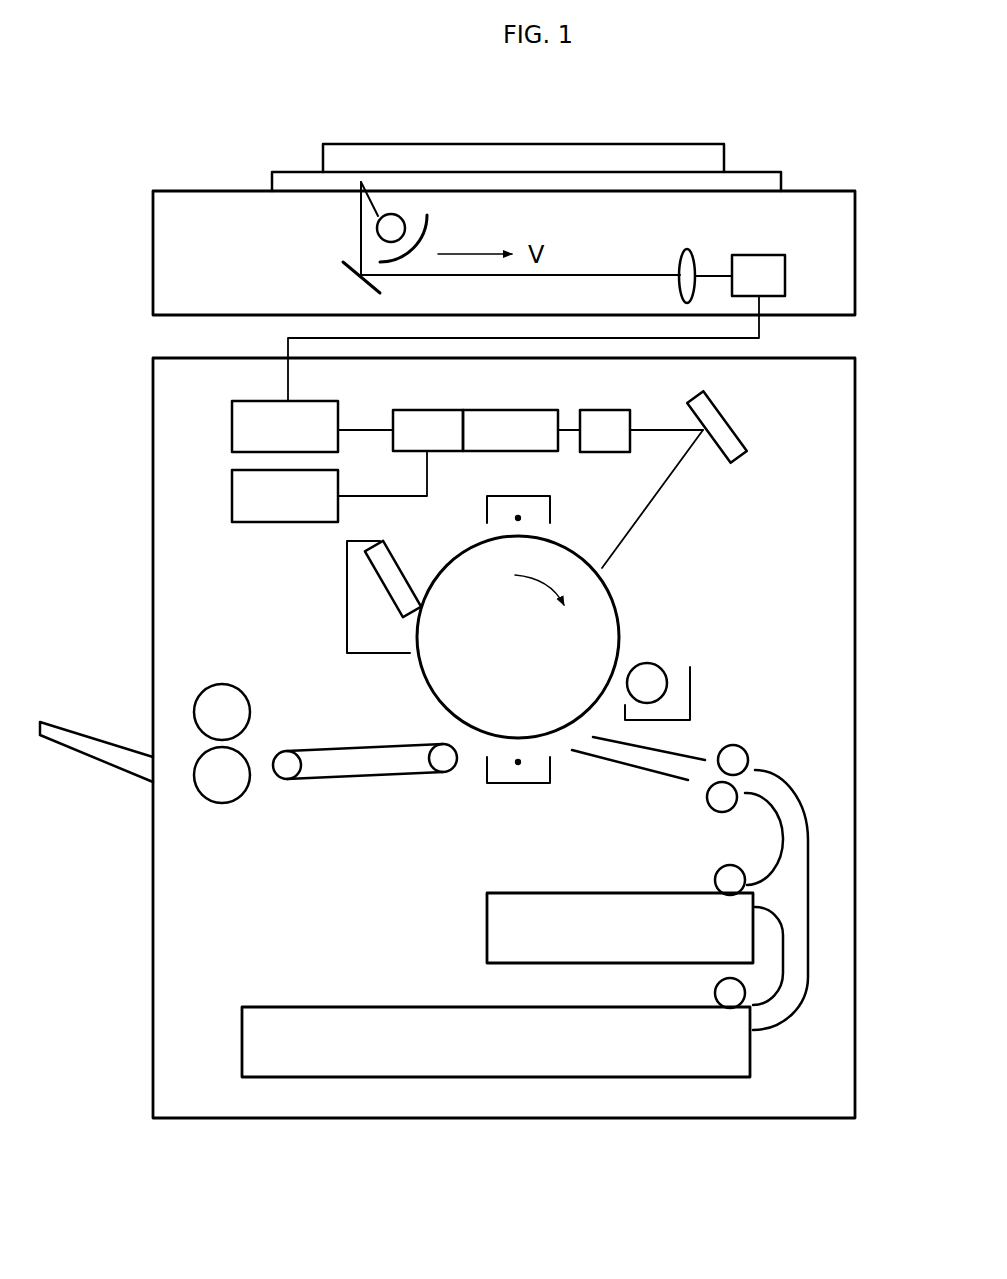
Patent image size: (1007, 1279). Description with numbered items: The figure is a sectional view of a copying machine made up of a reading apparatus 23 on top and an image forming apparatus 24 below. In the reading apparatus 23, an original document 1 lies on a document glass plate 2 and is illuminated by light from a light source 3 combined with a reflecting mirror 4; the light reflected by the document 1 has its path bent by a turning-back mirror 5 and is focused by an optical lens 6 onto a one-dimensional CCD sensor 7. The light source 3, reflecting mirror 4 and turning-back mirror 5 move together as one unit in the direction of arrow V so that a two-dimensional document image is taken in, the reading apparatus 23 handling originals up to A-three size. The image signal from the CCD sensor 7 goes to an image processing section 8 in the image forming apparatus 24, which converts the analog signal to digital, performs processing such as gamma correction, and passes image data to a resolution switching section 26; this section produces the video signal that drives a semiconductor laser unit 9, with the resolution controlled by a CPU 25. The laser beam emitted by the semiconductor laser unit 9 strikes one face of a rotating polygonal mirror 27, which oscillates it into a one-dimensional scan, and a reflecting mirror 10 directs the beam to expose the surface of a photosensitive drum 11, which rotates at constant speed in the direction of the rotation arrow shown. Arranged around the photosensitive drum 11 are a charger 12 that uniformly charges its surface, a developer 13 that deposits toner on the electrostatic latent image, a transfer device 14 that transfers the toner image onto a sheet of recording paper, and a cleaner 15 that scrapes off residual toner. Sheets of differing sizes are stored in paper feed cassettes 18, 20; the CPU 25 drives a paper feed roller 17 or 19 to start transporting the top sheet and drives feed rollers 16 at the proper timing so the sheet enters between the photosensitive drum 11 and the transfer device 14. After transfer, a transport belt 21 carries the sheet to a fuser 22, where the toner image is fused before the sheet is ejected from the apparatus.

The original document 1 is at (393, 142).
The document glass plate 2 is at (745, 170).
The light source 3 is at (377, 230).
The reflecting mirror 4 is at (428, 229).
The turning-back mirror 5 is at (341, 265).
The optical lens 6 is at (692, 245).
The CCD sensor 7 is at (753, 255).
The image processing section 8 is at (317, 400).
The semiconductor laser unit 9 is at (498, 408).
The reflecting mirror 10 is at (740, 437).
The photosensitive drum 11 is at (613, 603).
The charger 12 is at (550, 508).
The developer 13 is at (657, 675).
The transfer device 14 is at (518, 777).
The cleaner 15 is at (382, 637).
The feed rollers 16 is at (725, 762).
The paper feed roller 17 is at (723, 878).
The paper feed cassette 18 is at (595, 908).
The paper feed roller 19 is at (723, 997).
The paper feed cassette 20 is at (362, 1017).
The transport belt 21 is at (363, 780).
The fuser 22 is at (232, 710).
The reading apparatus 23 is at (843, 263).
The image forming apparatus 24 is at (843, 452).
The CPU 25 is at (270, 526).
The resolution switching section 26 is at (413, 408).
The rotating polygonal mirror 27 is at (598, 410).